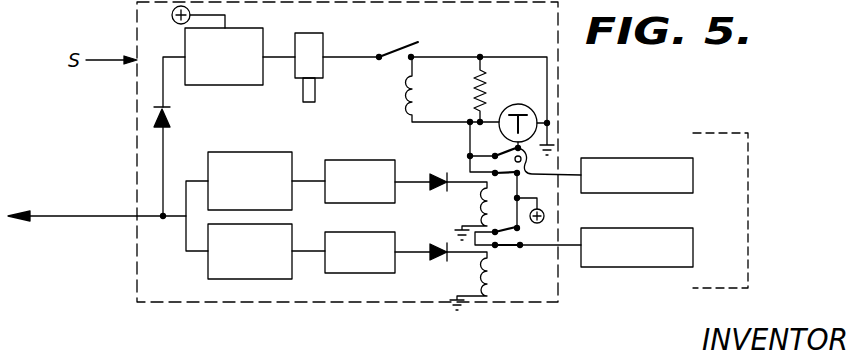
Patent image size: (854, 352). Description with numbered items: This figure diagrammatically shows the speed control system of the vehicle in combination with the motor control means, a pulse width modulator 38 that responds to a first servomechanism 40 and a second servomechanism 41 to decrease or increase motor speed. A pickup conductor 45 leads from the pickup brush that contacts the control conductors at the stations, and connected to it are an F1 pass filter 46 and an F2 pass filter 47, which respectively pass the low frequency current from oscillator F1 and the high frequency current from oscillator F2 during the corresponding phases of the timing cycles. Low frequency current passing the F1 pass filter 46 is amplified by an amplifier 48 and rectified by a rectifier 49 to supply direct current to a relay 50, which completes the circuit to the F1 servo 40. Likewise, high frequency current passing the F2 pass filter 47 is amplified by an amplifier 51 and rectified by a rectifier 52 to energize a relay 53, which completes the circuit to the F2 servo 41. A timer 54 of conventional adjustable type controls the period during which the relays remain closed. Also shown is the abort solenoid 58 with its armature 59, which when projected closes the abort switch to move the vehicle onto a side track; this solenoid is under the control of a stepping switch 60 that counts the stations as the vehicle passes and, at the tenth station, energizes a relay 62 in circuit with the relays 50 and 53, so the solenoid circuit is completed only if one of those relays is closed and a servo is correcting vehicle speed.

The pulse width modulator 38 is at (750, 163).
The first servomechanism 40 is at (654, 158).
The second servomechanism 41 is at (620, 228).
The pickup conductor 45 is at (67, 218).
The F1 pass filter 46 is at (278, 138).
The F2 pass filter 47 is at (208, 276).
The amplifier 48 is at (372, 160).
The rectifier 49 is at (443, 170).
The relay 50 is at (478, 212).
The amplifier 51 is at (335, 273).
The rectifier 52 is at (437, 262).
The relay 53 is at (494, 282).
The timer 54 is at (526, 104).
The solenoid 58 is at (325, 50).
The armature 59 is at (303, 90).
The stepping switch 60 is at (198, 85).
The relay 62 is at (418, 96).